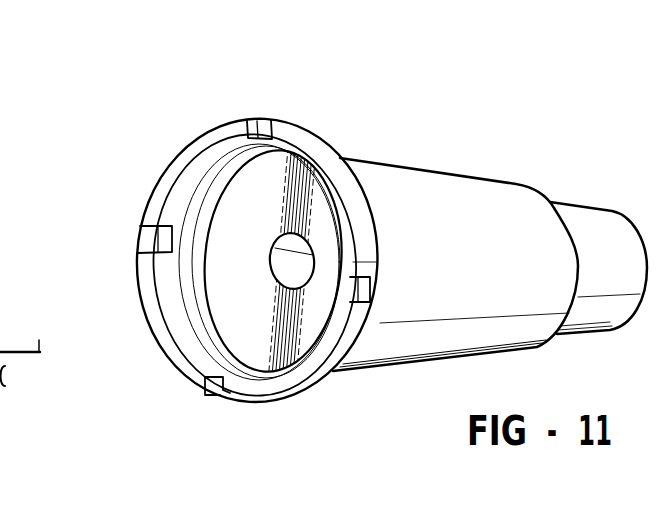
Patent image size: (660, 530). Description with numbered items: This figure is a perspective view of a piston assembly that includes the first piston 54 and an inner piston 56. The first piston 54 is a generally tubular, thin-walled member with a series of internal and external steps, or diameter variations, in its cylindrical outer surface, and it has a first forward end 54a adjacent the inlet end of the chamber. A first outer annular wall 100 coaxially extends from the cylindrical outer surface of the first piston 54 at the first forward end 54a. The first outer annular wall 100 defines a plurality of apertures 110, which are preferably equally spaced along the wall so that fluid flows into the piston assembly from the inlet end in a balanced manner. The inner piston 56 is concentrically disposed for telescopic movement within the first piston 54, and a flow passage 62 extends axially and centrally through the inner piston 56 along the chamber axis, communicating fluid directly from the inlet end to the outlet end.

The first outer annular wall 100 is at (315, 148).
The aperture 110 is at (268, 126).
The first piston 54 is at (450, 186).
The first forward end 54a is at (380, 363).
The inner piston 56 is at (259, 219).
The flow passage 62 is at (276, 241).